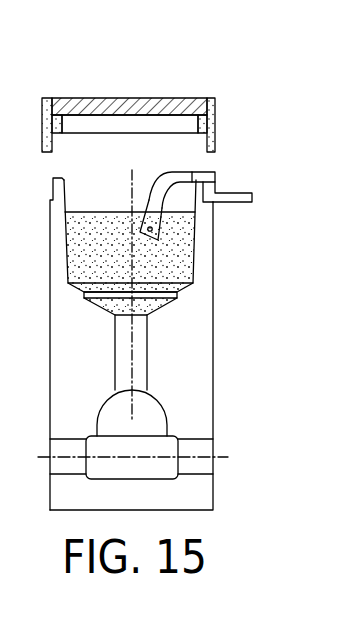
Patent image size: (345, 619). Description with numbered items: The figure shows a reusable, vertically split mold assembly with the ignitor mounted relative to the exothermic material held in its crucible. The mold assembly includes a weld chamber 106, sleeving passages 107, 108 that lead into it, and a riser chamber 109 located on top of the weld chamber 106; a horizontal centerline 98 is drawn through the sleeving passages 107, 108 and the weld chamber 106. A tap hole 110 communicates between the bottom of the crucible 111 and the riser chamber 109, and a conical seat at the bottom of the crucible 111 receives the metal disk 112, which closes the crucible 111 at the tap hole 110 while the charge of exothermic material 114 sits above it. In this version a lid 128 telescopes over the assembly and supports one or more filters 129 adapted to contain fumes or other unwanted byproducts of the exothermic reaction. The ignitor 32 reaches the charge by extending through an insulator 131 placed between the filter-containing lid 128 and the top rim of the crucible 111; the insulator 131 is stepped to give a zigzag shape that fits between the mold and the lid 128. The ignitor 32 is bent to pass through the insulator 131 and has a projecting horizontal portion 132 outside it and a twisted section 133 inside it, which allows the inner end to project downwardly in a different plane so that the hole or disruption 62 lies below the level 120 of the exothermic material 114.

The filter 129 is at (155, 99).
The lid 128 is at (215, 117).
The insulator 131 is at (214, 174).
The projecting horizontal portion 132 is at (247, 191).
The twisted section 133 is at (164, 173).
The ignitor 32 is at (148, 176).
The hole or disruption 62 is at (147, 225).
The exothermic material 114 is at (184, 228).
The level 120 is at (86, 211).
The crucible 111 is at (197, 259).
The metal disk 112 is at (165, 310).
The tap hole 110 is at (138, 360).
The riser chamber 109 is at (150, 415).
The sleeving passage 108 is at (198, 452).
The sleeving passage 107 is at (62, 465).
The axis 98 is at (114, 456).
The weld chamber 106 is at (160, 474).